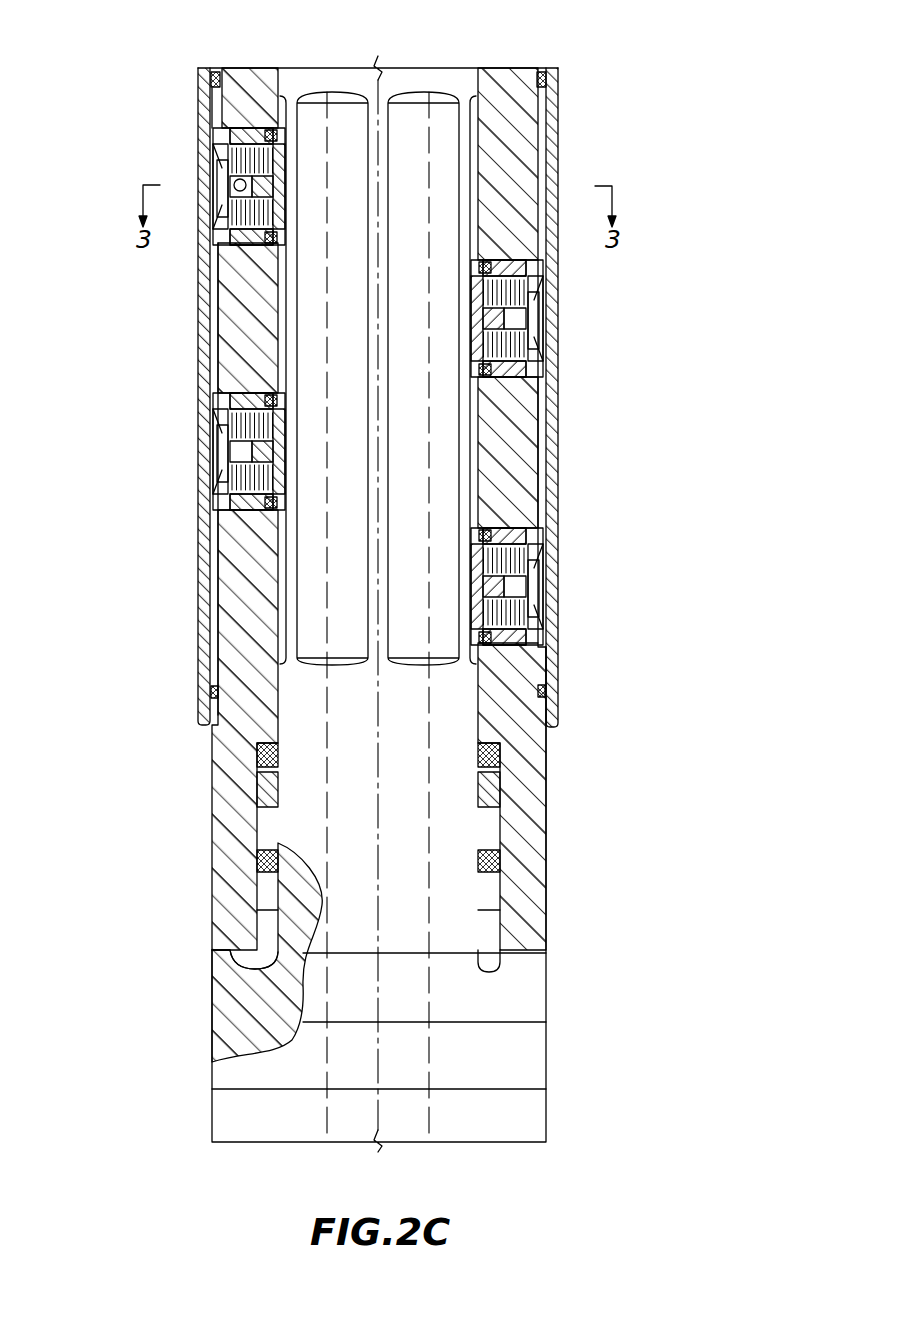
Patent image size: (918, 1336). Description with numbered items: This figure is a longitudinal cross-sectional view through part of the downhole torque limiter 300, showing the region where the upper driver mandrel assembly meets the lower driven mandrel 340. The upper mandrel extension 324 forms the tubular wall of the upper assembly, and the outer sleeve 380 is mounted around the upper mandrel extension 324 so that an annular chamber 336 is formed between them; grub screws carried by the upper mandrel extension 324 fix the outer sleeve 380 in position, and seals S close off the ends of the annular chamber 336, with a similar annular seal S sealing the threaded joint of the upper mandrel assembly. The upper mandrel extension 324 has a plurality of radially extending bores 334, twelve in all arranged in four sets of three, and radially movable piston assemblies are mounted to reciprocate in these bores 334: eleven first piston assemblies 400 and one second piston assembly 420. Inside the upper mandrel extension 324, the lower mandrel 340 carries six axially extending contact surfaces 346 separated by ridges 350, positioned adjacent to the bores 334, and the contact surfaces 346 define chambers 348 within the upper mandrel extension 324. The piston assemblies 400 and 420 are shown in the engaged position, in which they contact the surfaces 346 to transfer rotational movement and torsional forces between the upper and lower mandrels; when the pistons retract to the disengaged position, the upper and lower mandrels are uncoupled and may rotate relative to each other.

The torque limiter 300 is at (689, 67).
The outer sleeve 380 is at (552, 98).
The upper mandrel extension 324 is at (513, 138).
The second piston assembly 420 is at (232, 157).
The annular seal S is at (212, 80).
The radially extending bores 334 is at (213, 230).
The annular chamber 336 is at (218, 312).
The contact surfaces 346 is at (312, 340).
The first piston assemblies 400 is at (220, 450).
The chambers 348 is at (283, 630).
The ridges 350 is at (380, 458).
The lower driven mandrel 340 is at (238, 1013).